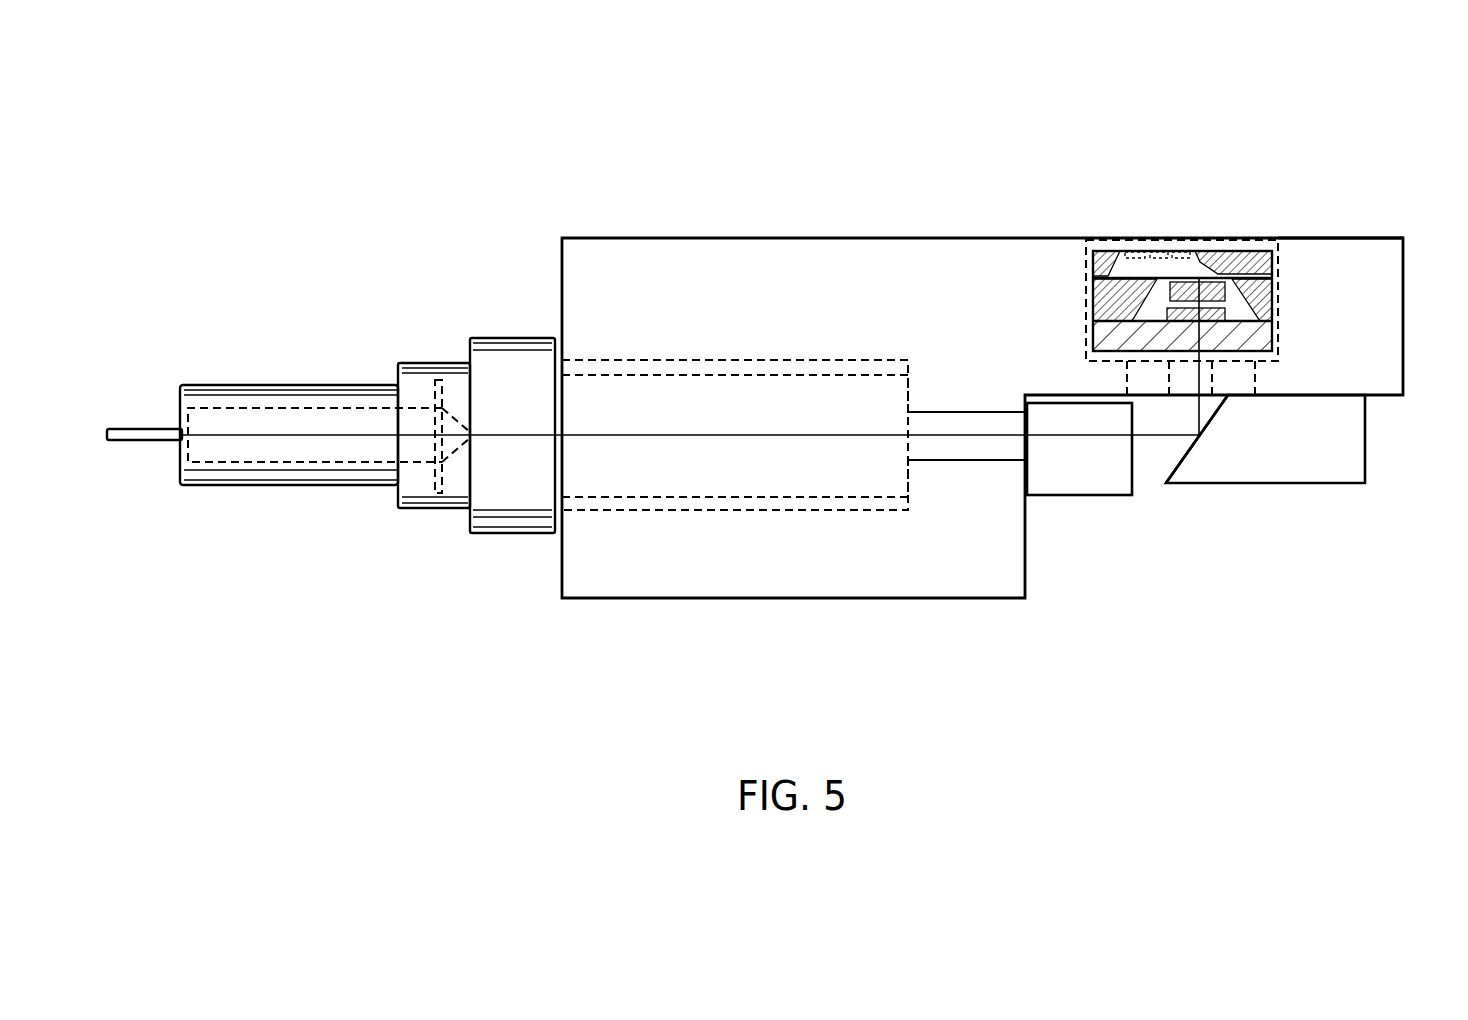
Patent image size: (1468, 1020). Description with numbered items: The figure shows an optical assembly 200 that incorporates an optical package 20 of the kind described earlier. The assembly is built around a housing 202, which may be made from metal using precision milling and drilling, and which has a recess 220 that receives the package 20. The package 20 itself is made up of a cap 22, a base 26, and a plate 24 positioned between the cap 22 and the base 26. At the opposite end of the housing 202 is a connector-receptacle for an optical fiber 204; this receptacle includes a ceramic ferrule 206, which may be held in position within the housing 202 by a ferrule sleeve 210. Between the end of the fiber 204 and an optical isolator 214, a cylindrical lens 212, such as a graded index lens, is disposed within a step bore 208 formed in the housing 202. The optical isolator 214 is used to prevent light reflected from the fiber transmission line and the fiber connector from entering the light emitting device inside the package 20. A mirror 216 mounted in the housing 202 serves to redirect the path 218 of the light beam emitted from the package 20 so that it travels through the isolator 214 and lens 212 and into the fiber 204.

The assembly 200 is at (458, 178).
The housing 202 is at (637, 598).
The optical fiber 204 is at (155, 427).
The ceramic ferrule 206 is at (253, 385).
The bore 208 is at (737, 497).
The ferrule sleeve 210 is at (693, 360).
The cylindrical lens 212 is at (968, 460).
The optical isolator 214 is at (1100, 483).
The mirror 216 is at (1365, 445).
The path 218 is at (1202, 410).
The recess 220 is at (1278, 319).
The optical package 20 is at (1208, 240).
The cap 22 is at (1093, 262).
The plate 24 is at (1093, 299).
The base 26 is at (1093, 333).